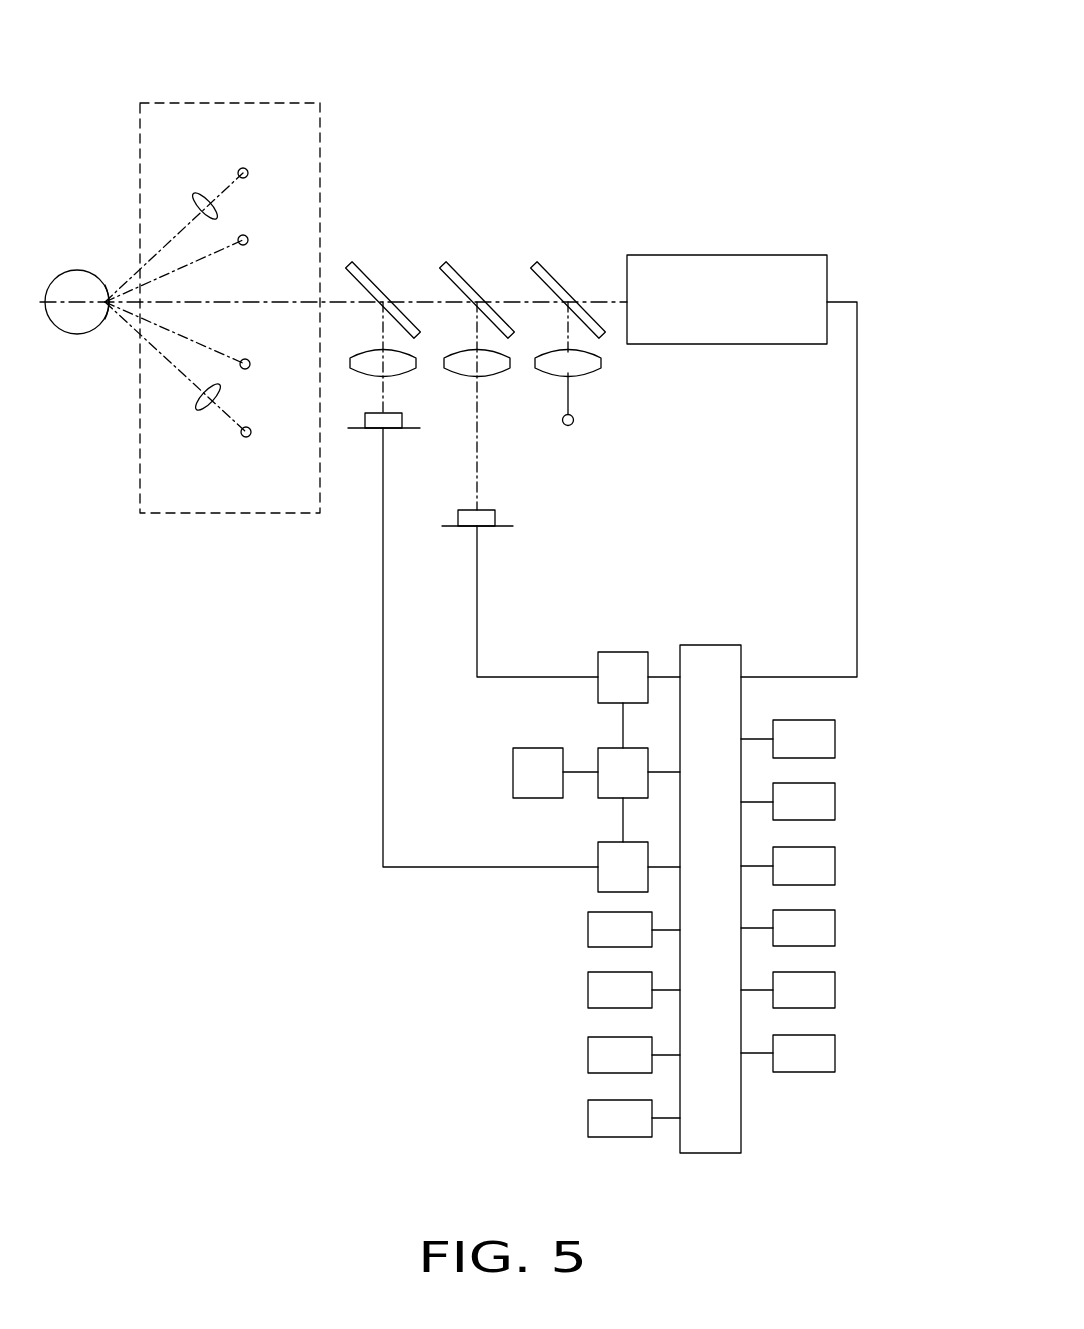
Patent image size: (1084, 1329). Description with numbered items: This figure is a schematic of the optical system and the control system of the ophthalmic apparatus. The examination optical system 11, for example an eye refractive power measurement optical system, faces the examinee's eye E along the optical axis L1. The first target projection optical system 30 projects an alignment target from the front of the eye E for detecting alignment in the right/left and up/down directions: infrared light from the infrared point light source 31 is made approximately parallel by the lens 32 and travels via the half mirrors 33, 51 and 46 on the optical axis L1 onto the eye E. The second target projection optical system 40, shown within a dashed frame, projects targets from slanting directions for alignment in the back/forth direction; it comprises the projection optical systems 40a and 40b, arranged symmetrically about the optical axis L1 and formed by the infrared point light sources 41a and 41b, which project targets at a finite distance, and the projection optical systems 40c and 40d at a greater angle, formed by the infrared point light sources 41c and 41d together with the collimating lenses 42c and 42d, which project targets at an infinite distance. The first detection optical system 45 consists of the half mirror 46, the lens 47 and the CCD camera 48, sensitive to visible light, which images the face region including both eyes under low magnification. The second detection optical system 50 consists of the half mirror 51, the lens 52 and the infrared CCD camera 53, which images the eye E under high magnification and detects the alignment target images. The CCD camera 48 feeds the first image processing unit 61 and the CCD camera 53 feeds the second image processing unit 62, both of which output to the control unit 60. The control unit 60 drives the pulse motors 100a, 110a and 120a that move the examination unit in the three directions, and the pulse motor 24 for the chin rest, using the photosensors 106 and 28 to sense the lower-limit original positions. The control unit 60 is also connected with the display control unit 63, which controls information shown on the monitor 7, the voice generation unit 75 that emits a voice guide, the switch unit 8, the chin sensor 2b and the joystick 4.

The eye E is at (73, 280).
The optical axis L1 is at (258, 304).
The second target projection optical system 40 is at (220, 103).
The projection optical system 40a is at (212, 270).
The projection optical system 40b is at (214, 358).
The projection optical system 40c is at (171, 219).
The projection optical system 40d is at (159, 363).
The infrared point light source 41a is at (277, 223).
The infrared point light source 41b is at (281, 372).
The infrared point light source 41c is at (238, 170).
The infrared point light source 41d is at (243, 440).
The collimating lens 42c is at (198, 197).
The collimating lens 42d is at (203, 400).
The first detection optical system 45 is at (417, 446).
The half mirror 46 is at (373, 283).
The lens 47 is at (402, 372).
The CCD camera 48 is at (348, 428).
The second detection optical system 50 is at (507, 478).
The half mirror 51 is at (458, 278).
The lens 52 is at (492, 372).
The CCD camera 53 is at (487, 528).
The first target projection optical system 30 is at (637, 380).
The half mirror 33 is at (552, 273).
The lens 32 is at (587, 372).
The infrared point light source 31 is at (567, 428).
The examination optical system 11 is at (737, 255).
The control unit 60 is at (708, 645).
The first image processing unit 61 is at (598, 855).
The second image processing unit 62 is at (612, 652).
The display control unit 63 is at (608, 748).
The monitor 7 is at (513, 763).
The pulse motor 100a is at (835, 739).
The pulse motor 110a is at (835, 802).
The pulse motor 120a is at (835, 866).
The pulse motor 24 is at (835, 928).
The voice generation unit 75 is at (835, 990).
The switch unit 8 is at (835, 1053).
The photosensor 28 is at (588, 930).
The photosensor 106 is at (588, 990).
The sensor 2b is at (588, 1055).
The joystick 4 is at (588, 1118).